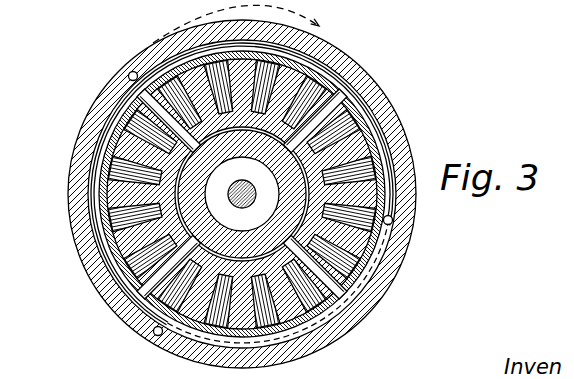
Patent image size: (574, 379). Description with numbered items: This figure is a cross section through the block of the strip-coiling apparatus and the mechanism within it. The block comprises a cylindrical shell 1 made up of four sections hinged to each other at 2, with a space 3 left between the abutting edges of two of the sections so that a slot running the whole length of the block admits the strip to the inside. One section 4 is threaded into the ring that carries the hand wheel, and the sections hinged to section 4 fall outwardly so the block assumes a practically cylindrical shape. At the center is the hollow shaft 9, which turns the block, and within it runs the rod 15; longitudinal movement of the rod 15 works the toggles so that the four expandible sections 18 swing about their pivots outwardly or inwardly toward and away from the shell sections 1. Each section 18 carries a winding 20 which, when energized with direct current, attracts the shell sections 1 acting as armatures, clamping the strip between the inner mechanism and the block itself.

The cylindrical shell 1 is at (235, 193).
The hinges 2 is at (129, 74).
The space or slot 3 is at (314, 43).
The shell section 4 is at (390, 118).
The hollow shaft 9 is at (242, 155).
The rod 15 is at (241, 206).
The expandible sections 18 is at (103, 183).
The windings 20 is at (122, 117).